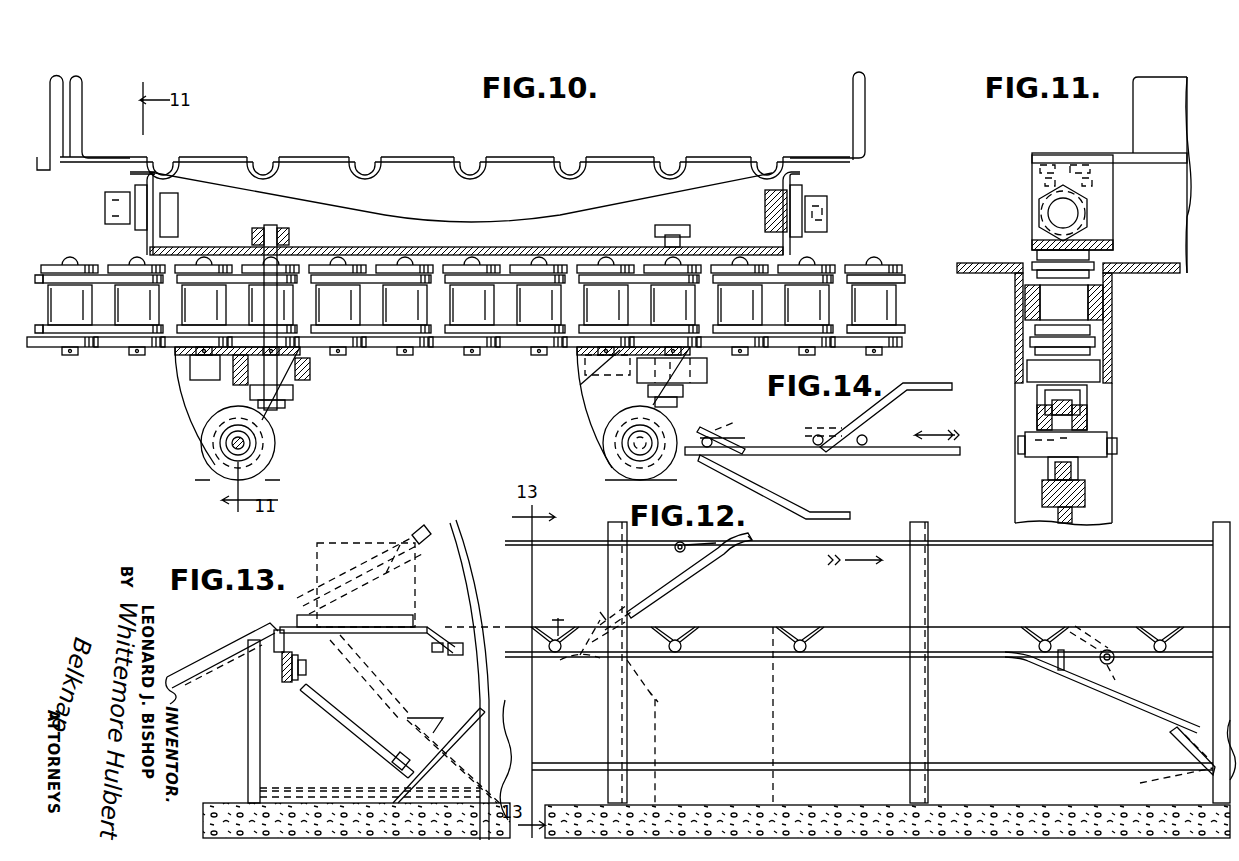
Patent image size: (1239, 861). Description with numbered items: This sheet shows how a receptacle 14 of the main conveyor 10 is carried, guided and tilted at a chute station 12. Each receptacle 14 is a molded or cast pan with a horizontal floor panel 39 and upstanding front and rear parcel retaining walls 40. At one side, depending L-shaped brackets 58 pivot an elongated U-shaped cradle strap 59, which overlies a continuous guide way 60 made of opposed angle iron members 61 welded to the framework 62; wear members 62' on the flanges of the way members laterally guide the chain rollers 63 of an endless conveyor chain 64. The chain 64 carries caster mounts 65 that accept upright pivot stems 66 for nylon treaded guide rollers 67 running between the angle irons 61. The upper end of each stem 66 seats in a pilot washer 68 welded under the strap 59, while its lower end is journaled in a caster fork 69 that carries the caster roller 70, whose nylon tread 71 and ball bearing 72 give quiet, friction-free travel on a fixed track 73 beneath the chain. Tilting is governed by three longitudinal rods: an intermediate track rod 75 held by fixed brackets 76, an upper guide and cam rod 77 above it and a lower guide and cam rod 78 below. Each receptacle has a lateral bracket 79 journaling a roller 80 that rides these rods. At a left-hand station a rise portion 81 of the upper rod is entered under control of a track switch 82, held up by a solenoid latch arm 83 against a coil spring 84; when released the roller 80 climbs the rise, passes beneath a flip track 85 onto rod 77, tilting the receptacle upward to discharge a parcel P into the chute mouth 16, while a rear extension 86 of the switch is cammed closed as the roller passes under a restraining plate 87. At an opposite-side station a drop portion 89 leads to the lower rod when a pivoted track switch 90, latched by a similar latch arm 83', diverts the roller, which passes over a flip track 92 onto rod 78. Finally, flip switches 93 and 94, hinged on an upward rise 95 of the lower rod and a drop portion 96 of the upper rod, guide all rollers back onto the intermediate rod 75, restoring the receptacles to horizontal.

In FIG. 13, the main conveyor 10 is at (355, 633).
In FIG. 13, the chute station 12 is at (495, 745).
In FIG. 12, the chute station 12 is at (1204, 712).
In FIG. 10, the receptacle 14 is at (635, 148).
In FIG. 11, the receptacle 14 is at (1165, 74).
In FIG. 13, the receptacle 14 is at (425, 612).
In FIG. 12, the receptacle 14 is at (1140, 605).
In FIG. 13, the mouth 16 is at (225, 640).
In FIG. 12, the mouth 16 is at (1178, 735).
In FIG. 10, the floor panel 39 is at (425, 155).
In FIG. 11, the floor panel 39 is at (1155, 165).
In FIG. 10, the parcel retaining wall 40 is at (880, 118).
In FIG. 11, the parcel retaining wall 40 is at (1140, 108).
In FIG. 12, the parcel retaining wall 40 is at (880, 606).
In FIG. 10, the L-shaped bracket 58 is at (835, 237).
In FIG. 10, the cradle strap 59 is at (700, 247).
In FIG. 11, the guide way 60 is at (1125, 344).
In FIG. 13, the guide way 60 is at (275, 660).
In FIG. 11, the angle iron member 61 is at (1133, 318).
In FIG. 11, the framework 62 is at (1035, 237).
In FIG. 13, the framework 62 is at (458, 750).
In FIG. 12, the framework 62 is at (965, 706).
In FIG. 11, the wear member 62' is at (1120, 302).
In FIG. 11, the chain roller 63 is at (1095, 265).
In FIG. 10, the conveyor chain 64 is at (905, 262).
In FIG. 10, the caster mount 65 is at (565, 393).
In FIG. 13, the caster mount 65 is at (282, 678).
In FIG. 10, the pivot stem 66 is at (680, 222).
In FIG. 10, the guide roller 67 is at (725, 376).
In FIG. 11, the guide roller 67 is at (1090, 375).
In FIG. 13, the guide roller 67 is at (305, 678).
In FIG. 10, the pilot washer 68 is at (285, 245).
In FIG. 10, the caster fork 69 is at (205, 445).
In FIG. 10, the caster roller 70 is at (276, 443).
In FIG. 11, the caster roller 70 is at (1080, 408).
In FIG. 11, the nylon tread 71 is at (1045, 473).
In FIG. 11, the ball bearing 72 is at (1080, 462).
In FIG. 10, the fixed track 73 is at (310, 462).
In FIG. 11, the fixed track 73 is at (1085, 495).
In FIG. 13, the fixed track 73 is at (285, 688).
In FIG. 14, the track rod 75 is at (915, 455).
In FIG. 13, the track rod 75 is at (455, 656).
In FIG. 12, the track rod 75 is at (725, 657).
In FIG. 13, the bracket 76 is at (480, 672).
In FIG. 14, the upper guide and cam rod 77 is at (915, 385).
In FIG. 13, the upper guide and cam rod 77 is at (432, 530).
In FIG. 12, the upper guide and cam rod 77 is at (885, 570).
In FIG. 14, the lower guide and cam rod 78 is at (838, 512).
In FIG. 13, the lower guide and cam rod 78 is at (400, 760).
In FIG. 12, the lower guide and cam rod 78 is at (855, 763).
In FIG. 13, the bracket 79 is at (432, 645).
In FIG. 14, the roller 80 is at (868, 437).
In FIG. 13, the roller 80 is at (497, 602).
In FIG. 12, the rise portion 81 is at (695, 565).
In FIG. 12, the track switch 82 is at (565, 670).
In FIG. 12, the latch arm 83 is at (556, 598).
In FIG. 12, the latch arm 83' is at (1045, 676).
In FIG. 12, the coil spring 84 is at (589, 678).
In FIG. 12, the flip track 85 is at (750, 540).
In FIG. 12, the rear extension 86 is at (648, 625).
In FIG. 12, the restraining plate 87 is at (625, 600).
In FIG. 12, the drop portion 89 is at (1125, 697).
In FIG. 12, the track switch 90 is at (1118, 660).
In FIG. 12, the flip track 92 is at (1150, 780).
In FIG. 14, the flip switch 93 is at (725, 435).
In FIG. 14, the flip switch 94 is at (835, 450).
In FIG. 14, the upward rise 95 is at (780, 497).
In FIG. 14, the drop portion 96 is at (855, 420).
In FIG. 13, the package P is at (402, 598).